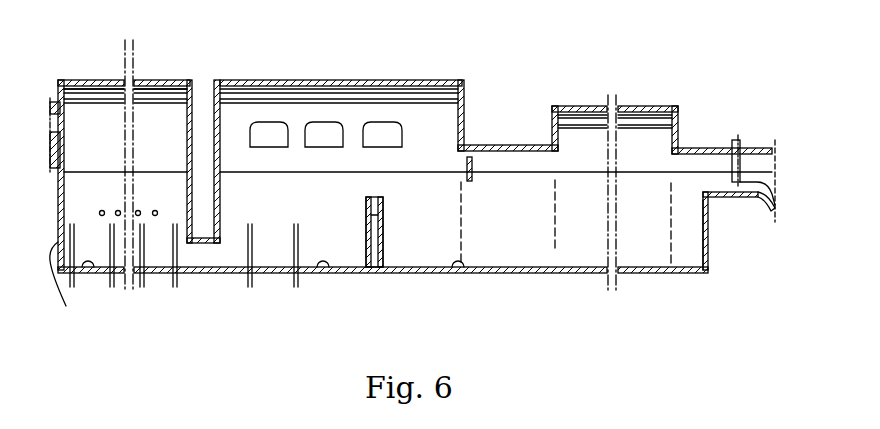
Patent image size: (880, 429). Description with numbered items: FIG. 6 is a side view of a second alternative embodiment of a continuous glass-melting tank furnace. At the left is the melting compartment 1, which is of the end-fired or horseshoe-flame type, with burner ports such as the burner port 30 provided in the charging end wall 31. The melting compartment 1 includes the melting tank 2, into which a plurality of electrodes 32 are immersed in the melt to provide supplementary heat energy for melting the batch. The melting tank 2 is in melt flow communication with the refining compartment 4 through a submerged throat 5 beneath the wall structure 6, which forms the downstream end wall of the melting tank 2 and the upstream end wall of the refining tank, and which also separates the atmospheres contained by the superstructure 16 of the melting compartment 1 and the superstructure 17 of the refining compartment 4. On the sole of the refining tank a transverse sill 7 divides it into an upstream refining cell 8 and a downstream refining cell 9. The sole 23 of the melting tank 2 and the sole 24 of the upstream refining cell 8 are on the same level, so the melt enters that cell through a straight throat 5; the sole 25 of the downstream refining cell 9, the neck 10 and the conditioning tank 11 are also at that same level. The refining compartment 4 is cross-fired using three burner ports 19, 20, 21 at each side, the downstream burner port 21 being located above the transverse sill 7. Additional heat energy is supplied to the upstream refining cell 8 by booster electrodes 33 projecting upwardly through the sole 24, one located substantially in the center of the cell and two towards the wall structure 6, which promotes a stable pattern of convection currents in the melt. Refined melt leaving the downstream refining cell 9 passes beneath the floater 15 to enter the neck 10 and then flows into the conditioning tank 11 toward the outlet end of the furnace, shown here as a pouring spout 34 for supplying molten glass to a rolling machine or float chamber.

The melting compartment 1 is at (174, 77).
The melting tank 2 is at (88, 206).
The refining compartment 4 is at (434, 75).
The throat 5 is at (210, 260).
The wall structure 6 is at (215, 80).
The transverse sill 7 is at (381, 209).
The upstream refining cell 8 is at (345, 223).
The downstream refining cell 9 is at (436, 223).
The neck 10 is at (535, 223).
The conditioning tank 11 is at (654, 223).
The floater 15 is at (471, 158).
The superstructure 16 is at (75, 82).
The superstructure 17 is at (323, 80).
The burner port 19 is at (281, 143).
The burner port 20 is at (336, 143).
The burner port 21 is at (394, 143).
The sole 23 is at (92, 262).
The sole 24 is at (326, 262).
The sole 25 is at (460, 262).
The burner port 30 is at (58, 152).
The charging end wall 31 is at (71, 284).
The electrodes 32 is at (156, 210).
The booster electrodes 33 is at (250, 287).
The pouring spout 34 is at (753, 205).